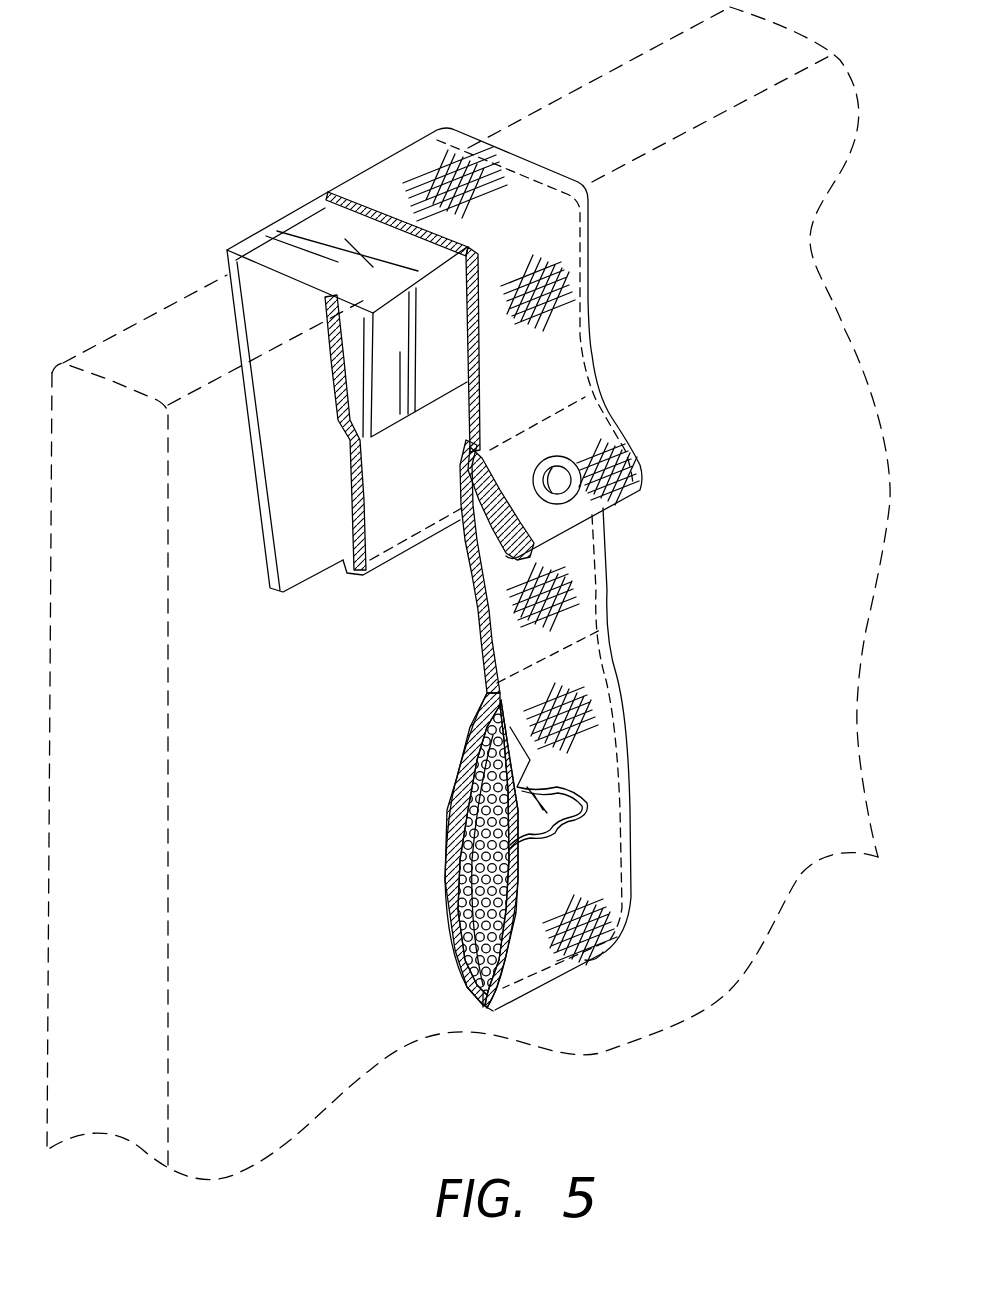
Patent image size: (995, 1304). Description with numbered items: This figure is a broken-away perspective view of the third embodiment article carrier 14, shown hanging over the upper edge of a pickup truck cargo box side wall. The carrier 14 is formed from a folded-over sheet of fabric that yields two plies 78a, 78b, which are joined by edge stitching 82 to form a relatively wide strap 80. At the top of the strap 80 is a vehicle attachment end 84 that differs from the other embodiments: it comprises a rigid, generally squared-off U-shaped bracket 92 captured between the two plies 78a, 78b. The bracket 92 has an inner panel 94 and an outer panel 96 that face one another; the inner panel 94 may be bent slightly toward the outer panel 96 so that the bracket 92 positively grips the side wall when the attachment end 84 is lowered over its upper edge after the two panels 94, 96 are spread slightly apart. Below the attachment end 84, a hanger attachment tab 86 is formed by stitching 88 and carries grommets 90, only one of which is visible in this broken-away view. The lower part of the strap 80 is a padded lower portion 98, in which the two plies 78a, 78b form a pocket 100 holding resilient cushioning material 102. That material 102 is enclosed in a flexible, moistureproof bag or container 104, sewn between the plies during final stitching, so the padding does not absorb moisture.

The article carrier 14 is at (457, 587).
The first ply 78a is at (477, 610).
The second ply 78b is at (490, 658).
The strap 80 is at (586, 588).
The edge stitching 82 is at (585, 960).
The vehicle attachment end 84 is at (588, 243).
The hanger attachment tab 86 is at (641, 478).
The stitching 88 is at (593, 390).
The grommet 90 is at (547, 452).
The U-shaped bracket 92 is at (327, 372).
The inner panel 94 is at (253, 446).
The outer panel 96 is at (457, 351).
The padded lower portion 98 is at (610, 817).
The pocket 100 is at (487, 843).
The resilient cushioning material 102 is at (477, 830).
The moistureproof container 104 is at (547, 793).